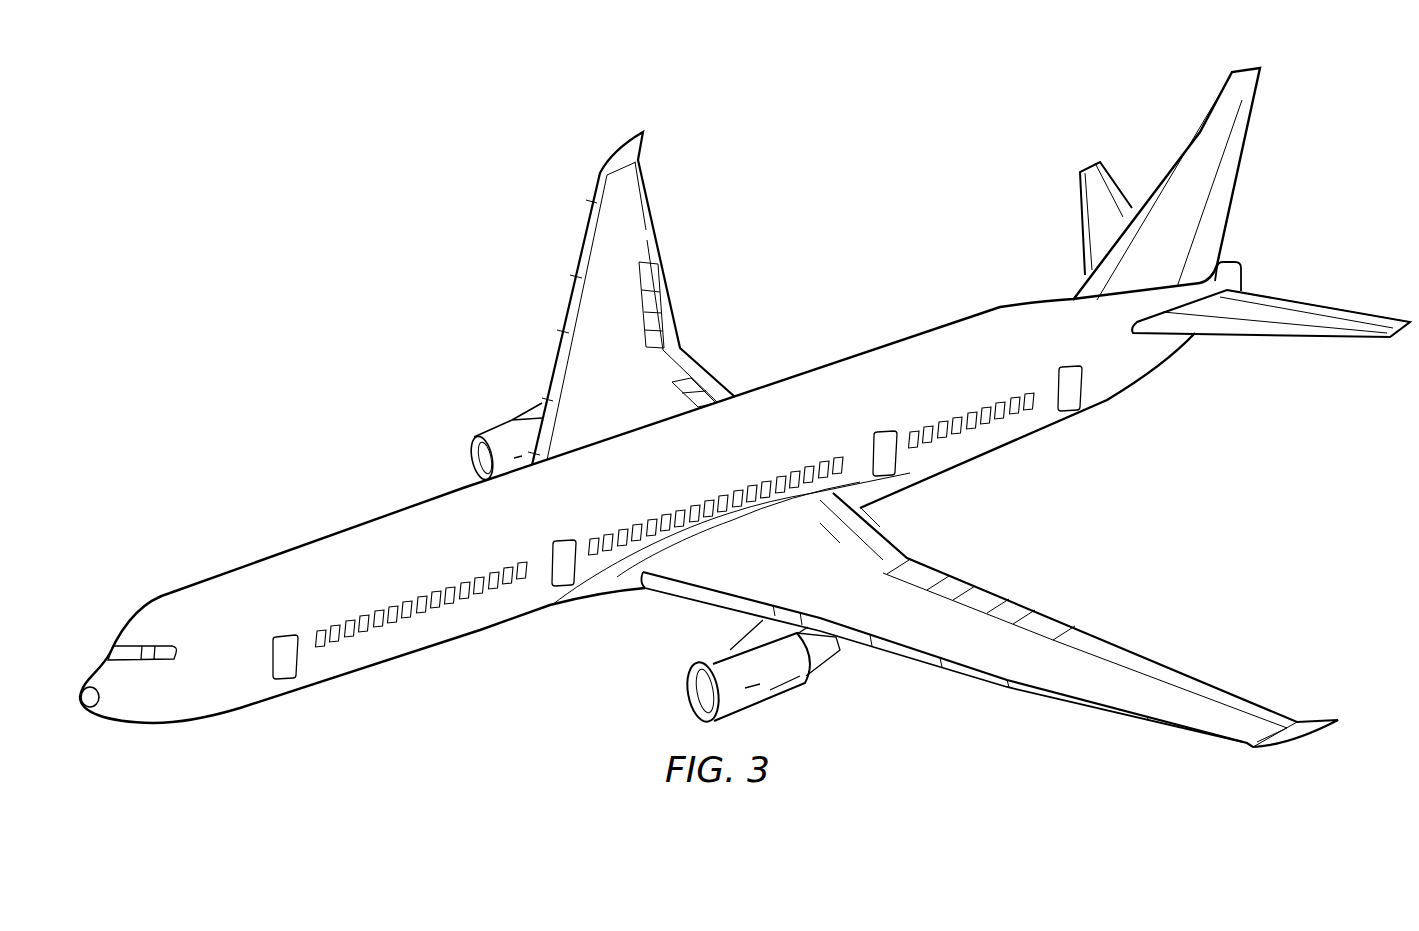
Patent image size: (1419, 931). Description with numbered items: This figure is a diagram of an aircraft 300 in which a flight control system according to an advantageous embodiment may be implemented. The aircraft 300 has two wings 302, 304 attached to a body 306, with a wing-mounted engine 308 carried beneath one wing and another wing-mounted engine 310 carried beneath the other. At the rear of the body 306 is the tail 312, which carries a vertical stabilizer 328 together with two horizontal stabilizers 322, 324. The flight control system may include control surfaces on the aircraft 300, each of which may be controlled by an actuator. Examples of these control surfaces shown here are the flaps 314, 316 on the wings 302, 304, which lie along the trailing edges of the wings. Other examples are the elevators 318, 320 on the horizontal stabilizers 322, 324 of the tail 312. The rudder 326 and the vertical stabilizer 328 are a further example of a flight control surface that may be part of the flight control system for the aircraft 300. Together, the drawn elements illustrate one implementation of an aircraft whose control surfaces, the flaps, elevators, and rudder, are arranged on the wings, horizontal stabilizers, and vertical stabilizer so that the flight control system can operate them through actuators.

The aircraft 300 is at (372, 297).
The wing 302 is at (1167, 692).
The wing 304 is at (613, 202).
The body 306 is at (340, 531).
The wing-mounted engine 308 is at (698, 692).
The wing-mounted engine 310 is at (490, 425).
The tail 312 is at (1343, 322).
The flap 314 is at (1002, 597).
The flap 316 is at (671, 293).
The elevator 318 is at (1288, 300).
The elevator 320 is at (1117, 185).
The horizontal stabilizer 322 is at (1273, 337).
The horizontal stabilizer 324 is at (1080, 215).
The rudder 326 is at (1245, 152).
The vertical stabilizer 328 is at (1197, 115).